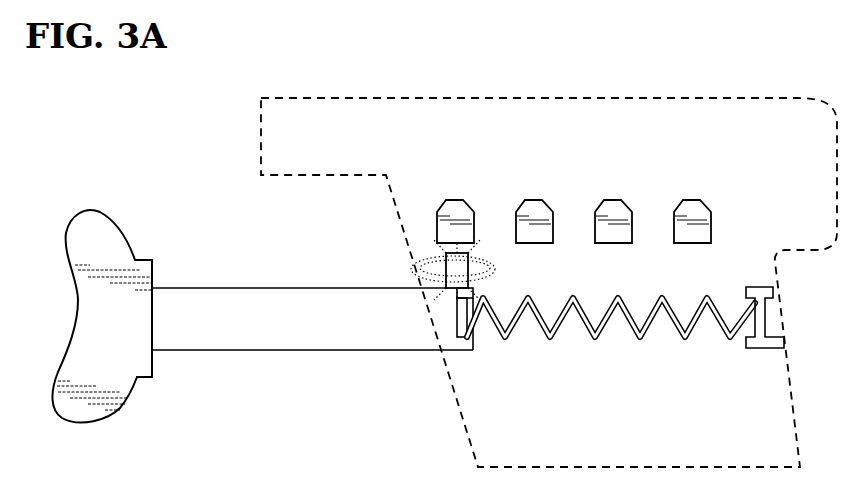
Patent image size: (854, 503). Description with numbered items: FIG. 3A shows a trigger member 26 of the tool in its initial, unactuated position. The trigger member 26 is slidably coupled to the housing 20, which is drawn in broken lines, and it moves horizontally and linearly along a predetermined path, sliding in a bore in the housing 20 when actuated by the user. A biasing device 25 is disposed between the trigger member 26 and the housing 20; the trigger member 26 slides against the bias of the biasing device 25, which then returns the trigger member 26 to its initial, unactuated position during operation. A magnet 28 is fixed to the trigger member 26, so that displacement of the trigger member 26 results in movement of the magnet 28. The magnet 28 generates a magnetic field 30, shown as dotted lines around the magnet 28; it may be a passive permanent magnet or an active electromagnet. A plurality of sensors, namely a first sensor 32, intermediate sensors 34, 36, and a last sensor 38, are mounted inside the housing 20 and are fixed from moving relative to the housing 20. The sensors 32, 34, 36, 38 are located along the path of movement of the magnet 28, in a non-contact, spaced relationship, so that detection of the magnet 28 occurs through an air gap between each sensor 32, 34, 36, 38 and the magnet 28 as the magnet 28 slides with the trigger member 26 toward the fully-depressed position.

The housing 20 is at (372, 98).
The biasing device 25 is at (728, 338).
The trigger member 26 is at (77, 303).
The magnet 28 is at (447, 270).
The magnetic field 30 is at (430, 258).
The first sensor 32 is at (455, 200).
The intermediate sensor 34 is at (535, 200).
The intermediate sensor 36 is at (614, 200).
The last sensor 38 is at (693, 200).